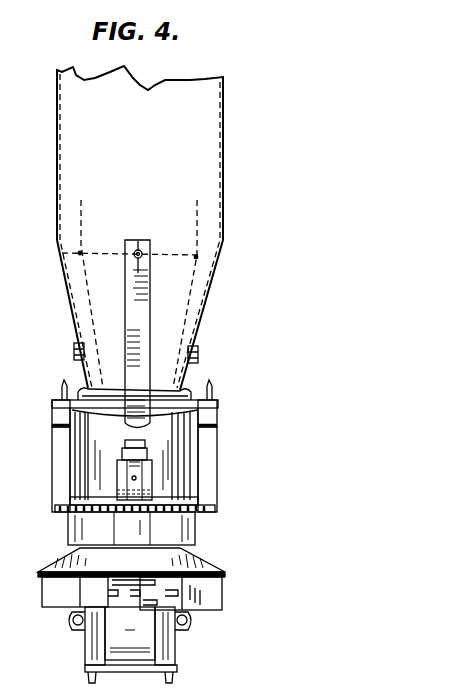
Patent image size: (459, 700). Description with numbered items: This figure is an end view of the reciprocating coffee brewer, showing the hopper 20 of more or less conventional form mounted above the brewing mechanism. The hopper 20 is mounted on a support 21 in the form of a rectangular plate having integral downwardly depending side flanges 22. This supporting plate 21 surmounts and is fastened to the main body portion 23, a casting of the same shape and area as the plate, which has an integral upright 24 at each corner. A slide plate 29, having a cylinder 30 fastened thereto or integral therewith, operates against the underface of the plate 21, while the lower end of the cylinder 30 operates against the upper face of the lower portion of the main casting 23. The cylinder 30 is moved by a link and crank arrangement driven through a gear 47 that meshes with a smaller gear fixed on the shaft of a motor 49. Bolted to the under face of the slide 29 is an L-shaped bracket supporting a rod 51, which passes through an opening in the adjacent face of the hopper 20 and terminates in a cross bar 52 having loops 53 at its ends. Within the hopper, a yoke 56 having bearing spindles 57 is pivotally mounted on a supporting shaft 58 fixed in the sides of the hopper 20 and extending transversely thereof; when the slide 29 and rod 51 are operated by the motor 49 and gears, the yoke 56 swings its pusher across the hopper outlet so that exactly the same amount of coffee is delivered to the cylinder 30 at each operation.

The hopper 20 is at (213, 160).
The support 21 is at (182, 392).
The side flanges 22 is at (58, 415).
The main body portion 23 is at (218, 496).
The upright 24 is at (62, 447).
The slide plate 29 is at (115, 412).
The cylinder 30 is at (167, 442).
The gear 47 is at (200, 513).
The motor 49 is at (180, 640).
The rod 51 is at (139, 240).
The cross bar 52 is at (98, 245).
The loops 53 is at (62, 253).
The yoke 56 is at (200, 292).
The bearing spindles 57 is at (66, 295).
The supporting shaft 58 is at (74, 350).